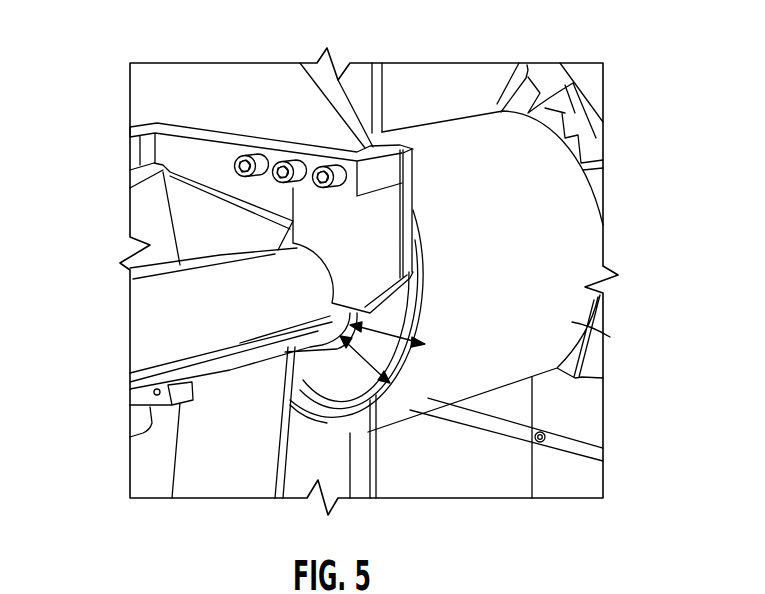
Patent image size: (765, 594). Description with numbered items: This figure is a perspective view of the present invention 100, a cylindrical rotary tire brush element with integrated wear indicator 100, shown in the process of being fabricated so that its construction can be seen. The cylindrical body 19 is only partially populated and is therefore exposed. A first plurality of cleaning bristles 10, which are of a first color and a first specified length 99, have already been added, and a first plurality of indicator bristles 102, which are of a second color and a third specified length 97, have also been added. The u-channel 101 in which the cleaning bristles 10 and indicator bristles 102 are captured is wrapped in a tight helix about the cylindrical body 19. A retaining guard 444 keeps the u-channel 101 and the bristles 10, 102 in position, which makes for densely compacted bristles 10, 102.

The cylindrical rotary tire brush element with integrated wear indicator 100 is at (614, 147).
The first plurality of cleaning bristles 10 is at (573, 322).
The retaining guard 444 is at (372, 232).
The cylindrical body 19 is at (143, 345).
The u-channel 101 is at (140, 372).
The first specified length 99 is at (392, 388).
The third specified length 97 is at (361, 398).
The first plurality of indicator bristles 102 is at (330, 390).